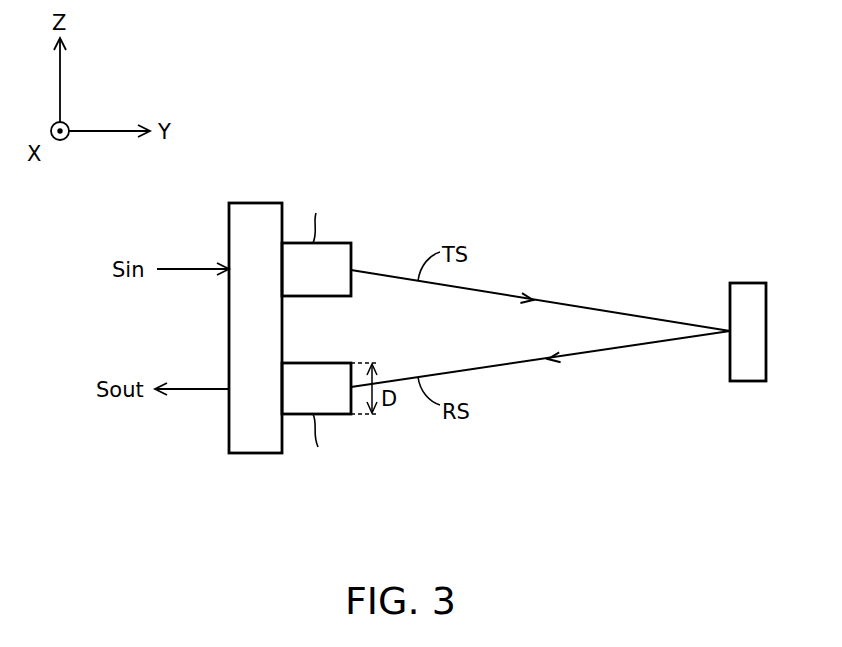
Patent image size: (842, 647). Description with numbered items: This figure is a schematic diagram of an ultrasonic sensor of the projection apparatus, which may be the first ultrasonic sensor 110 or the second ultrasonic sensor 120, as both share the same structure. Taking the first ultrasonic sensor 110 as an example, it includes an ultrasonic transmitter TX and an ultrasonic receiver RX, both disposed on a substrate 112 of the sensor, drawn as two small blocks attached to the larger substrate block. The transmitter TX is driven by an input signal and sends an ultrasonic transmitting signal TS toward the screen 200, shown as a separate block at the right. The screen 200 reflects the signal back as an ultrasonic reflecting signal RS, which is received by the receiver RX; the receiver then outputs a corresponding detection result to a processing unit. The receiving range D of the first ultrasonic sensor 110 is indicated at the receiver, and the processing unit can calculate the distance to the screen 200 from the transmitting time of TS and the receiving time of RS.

The first ultrasonic sensor 110 is at (533, 179).
The second ultrasonic sensor 120 is at (290, 352).
The substrate 112 is at (252, 453).
The screen 200 is at (748, 283).